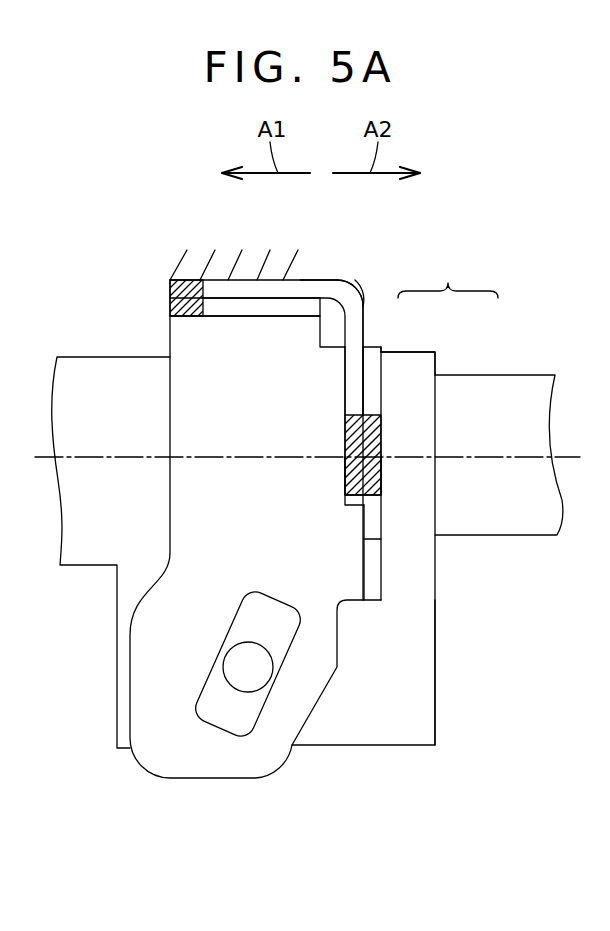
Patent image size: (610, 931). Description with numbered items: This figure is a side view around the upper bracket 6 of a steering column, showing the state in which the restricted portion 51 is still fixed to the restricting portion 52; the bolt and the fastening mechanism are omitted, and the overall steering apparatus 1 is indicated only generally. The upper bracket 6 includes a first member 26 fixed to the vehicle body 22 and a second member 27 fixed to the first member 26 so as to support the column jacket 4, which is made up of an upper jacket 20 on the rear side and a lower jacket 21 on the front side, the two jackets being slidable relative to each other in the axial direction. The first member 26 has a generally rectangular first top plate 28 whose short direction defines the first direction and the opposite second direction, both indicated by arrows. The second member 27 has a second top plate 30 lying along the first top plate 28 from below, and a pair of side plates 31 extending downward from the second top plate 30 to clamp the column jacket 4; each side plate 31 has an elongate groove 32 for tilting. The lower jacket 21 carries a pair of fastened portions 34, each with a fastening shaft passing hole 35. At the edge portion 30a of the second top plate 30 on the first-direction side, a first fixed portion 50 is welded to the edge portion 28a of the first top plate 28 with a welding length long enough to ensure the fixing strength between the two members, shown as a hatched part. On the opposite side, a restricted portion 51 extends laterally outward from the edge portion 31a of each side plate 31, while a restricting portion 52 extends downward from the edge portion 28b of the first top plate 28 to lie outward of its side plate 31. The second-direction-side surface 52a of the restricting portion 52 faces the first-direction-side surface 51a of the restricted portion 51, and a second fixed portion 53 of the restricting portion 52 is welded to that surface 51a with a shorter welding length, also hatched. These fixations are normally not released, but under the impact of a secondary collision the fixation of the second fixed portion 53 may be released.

The vehicle seat / assembly 1 is at (302, 865).
The column jacket 4 is at (448, 274).
The upper bracket 6 is at (364, 284).
The upper jacket 20 is at (493, 378).
The lower jacket 21 is at (412, 352).
The vehicle body 22 is at (192, 270).
The first member 26 is at (338, 278).
The second member 27 is at (118, 660).
The first top plate 28 is at (245, 290).
The edge portion of first top plate on first-direction-A1 side 28a is at (170, 285).
The edge portion of first top plate on second-direction-A2 side 28b is at (325, 280).
The second top plate 30 is at (265, 307).
The edge portion of second top plate on first-direction-A1 side 30a is at (170, 308).
The side plate 31 is at (130, 722).
The edge portion of side plate on second-direction-A2 side 31a is at (341, 607).
The elongate groove 32 is at (227, 732).
The fastened portion 34 is at (420, 720).
The fastening shaft passing hole 35 is at (247, 690).
The first fixed portion 50 is at (195, 318).
The restricted portion 51 is at (380, 568).
The first-direction-A1-side surface of restricted portion 51a is at (363, 523).
The restricting portion 52 is at (355, 388).
The second-direction-A2-side surface of restricting portion 52a is at (350, 440).
The second fixed portion 53 is at (350, 482).